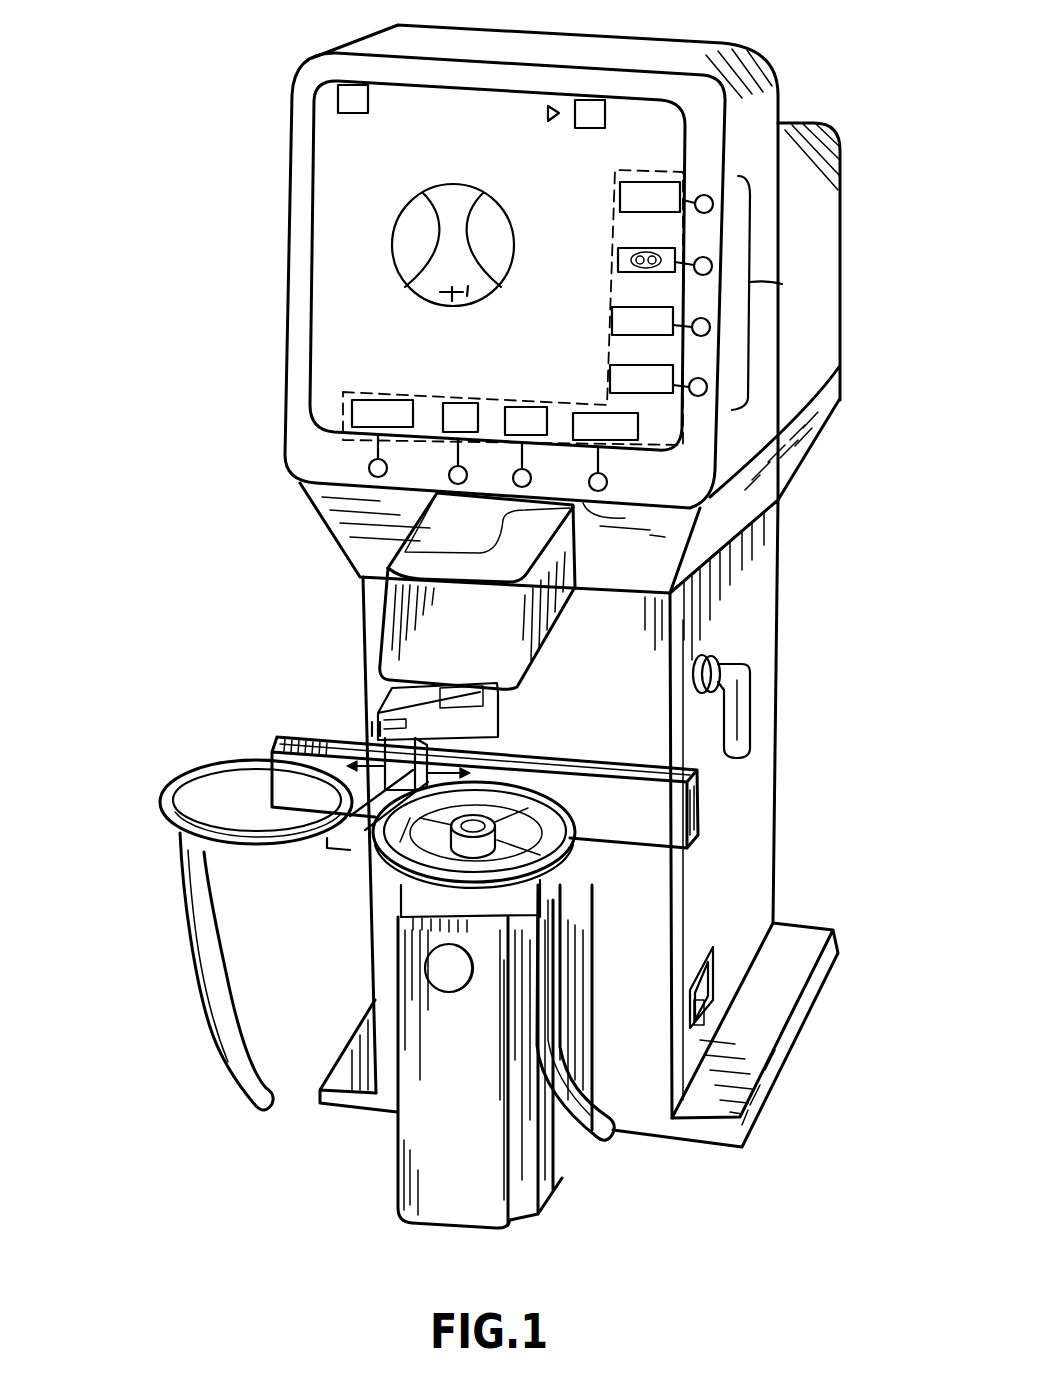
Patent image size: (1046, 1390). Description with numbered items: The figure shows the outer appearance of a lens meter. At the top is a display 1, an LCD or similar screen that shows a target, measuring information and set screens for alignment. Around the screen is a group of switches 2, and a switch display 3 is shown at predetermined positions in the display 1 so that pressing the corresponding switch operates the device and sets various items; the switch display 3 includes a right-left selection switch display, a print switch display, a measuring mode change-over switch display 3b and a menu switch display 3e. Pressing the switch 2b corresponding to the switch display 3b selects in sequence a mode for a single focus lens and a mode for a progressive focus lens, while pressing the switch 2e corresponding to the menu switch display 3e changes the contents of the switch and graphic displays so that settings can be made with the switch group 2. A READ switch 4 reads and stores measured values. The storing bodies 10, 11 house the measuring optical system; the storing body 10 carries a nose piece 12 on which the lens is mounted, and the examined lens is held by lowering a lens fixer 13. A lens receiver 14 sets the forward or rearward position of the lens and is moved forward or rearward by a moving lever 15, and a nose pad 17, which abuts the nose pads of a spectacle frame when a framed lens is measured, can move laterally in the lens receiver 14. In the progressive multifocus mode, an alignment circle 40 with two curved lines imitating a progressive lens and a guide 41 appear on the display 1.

The display 1 is at (343, 240).
The switch group 2 is at (782, 284).
The switch 2b is at (713, 267).
The switch 2e is at (370, 463).
The switch display 3 is at (650, 173).
The measuring mode change-over switch display 3b is at (612, 273).
The menu switch display 3e is at (387, 397).
The READ switch 4 is at (447, 992).
The storing body 10 is at (477, 1142).
The storing body 11 is at (432, 605).
The nose piece 12 is at (447, 880).
The lens fixer 13 is at (383, 712).
The lens receiver 14 is at (667, 824).
The moving lever 15 is at (737, 724).
The nose pad 17 is at (352, 822).
The alignment circle 40 is at (450, 183).
The guide 41 is at (450, 293).